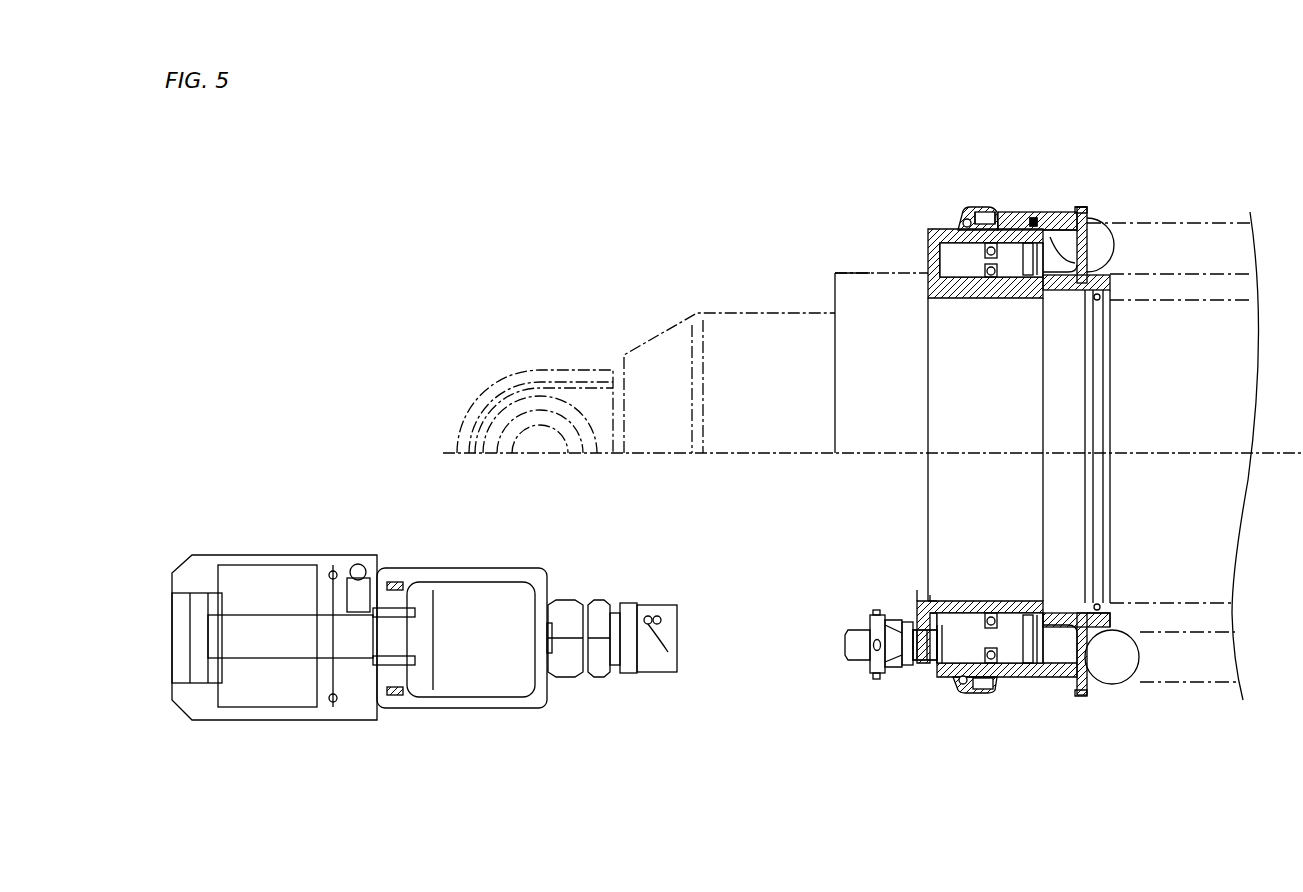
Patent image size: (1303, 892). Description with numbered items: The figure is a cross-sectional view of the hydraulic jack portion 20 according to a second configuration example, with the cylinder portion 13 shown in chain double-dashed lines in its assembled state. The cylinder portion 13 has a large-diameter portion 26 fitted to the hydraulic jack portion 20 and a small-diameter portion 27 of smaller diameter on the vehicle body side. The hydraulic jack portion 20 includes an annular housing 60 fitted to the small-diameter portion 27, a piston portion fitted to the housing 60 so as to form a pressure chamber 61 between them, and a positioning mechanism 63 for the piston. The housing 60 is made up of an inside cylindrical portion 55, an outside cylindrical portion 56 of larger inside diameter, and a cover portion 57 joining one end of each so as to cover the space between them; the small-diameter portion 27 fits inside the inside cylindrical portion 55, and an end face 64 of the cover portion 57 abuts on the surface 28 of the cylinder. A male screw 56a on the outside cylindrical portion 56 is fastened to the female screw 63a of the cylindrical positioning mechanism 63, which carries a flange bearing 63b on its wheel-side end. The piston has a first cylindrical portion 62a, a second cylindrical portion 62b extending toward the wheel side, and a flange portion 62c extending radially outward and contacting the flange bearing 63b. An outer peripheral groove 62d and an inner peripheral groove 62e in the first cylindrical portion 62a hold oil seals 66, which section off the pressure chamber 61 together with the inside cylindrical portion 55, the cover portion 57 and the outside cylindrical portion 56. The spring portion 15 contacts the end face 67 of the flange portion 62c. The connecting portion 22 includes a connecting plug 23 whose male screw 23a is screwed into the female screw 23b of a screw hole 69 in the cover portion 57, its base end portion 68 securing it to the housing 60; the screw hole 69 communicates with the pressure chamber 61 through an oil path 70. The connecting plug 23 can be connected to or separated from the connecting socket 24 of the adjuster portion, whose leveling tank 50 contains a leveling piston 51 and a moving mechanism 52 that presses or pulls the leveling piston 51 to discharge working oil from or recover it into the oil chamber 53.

The cylinder portion 13 is at (822, 232).
The spring portion 15 is at (1116, 685).
The hydraulic jack portion 20 is at (991, 762).
The connecting portion 22 is at (895, 690).
The connecting plug 23 is at (852, 665).
The male screw 23a is at (923, 672).
The female screw 23b is at (925, 645).
The connecting socket 24 is at (650, 602).
The large-diameter portion 26 is at (888, 270).
The small-diameter portion 27 is at (1186, 302).
The surface 28 is at (927, 229).
The leveling tank 50 is at (534, 706).
The leveling piston 51 is at (426, 684).
The moving mechanism 52 is at (347, 538).
The oil chamber 53 is at (493, 600).
The inside cylindrical portion 55 is at (970, 258).
The outside cylindrical portion 56 is at (1005, 222).
The male screw 56a is at (1033, 222).
The cover portion 57 is at (1048, 255).
The housing 60 is at (980, 208).
The pressure chamber 61 is at (1006, 228).
The first cylindrical portion 62a is at (1020, 272).
The second cylindrical portion 62b is at (1045, 292).
The flange portion 62c is at (1083, 248).
The outer peripheral groove 62d is at (985, 692).
The inner peripheral groove 62e is at (987, 600).
The positioning mechanism 63 is at (1050, 208).
The female screw 63a is at (1043, 212).
The flange bearing 63b is at (1070, 662).
The end face 64 is at (927, 255).
The oil seals 66 is at (996, 252).
The end face 67 is at (1088, 213).
The base end portion 68 is at (907, 618).
The screw hole 69 is at (943, 668).
The oil path 70 is at (953, 615).